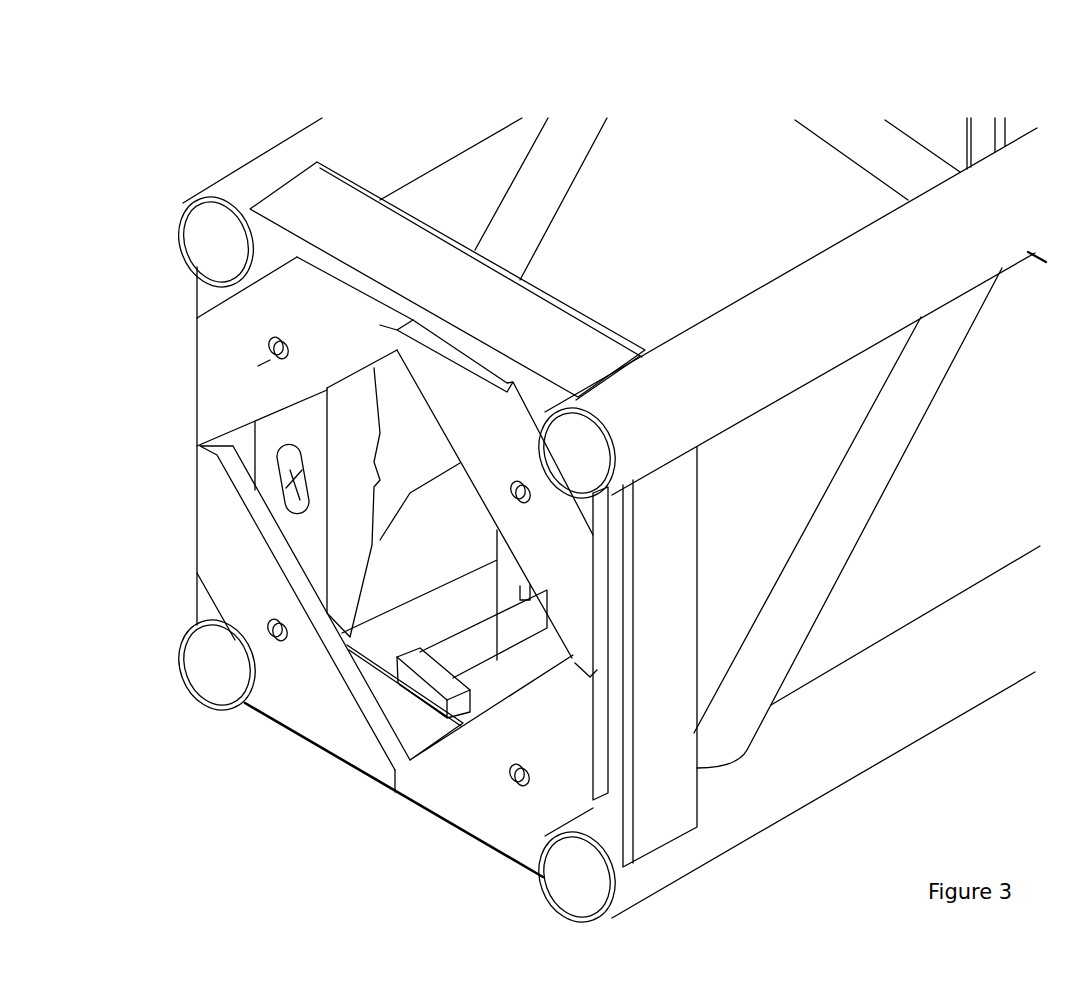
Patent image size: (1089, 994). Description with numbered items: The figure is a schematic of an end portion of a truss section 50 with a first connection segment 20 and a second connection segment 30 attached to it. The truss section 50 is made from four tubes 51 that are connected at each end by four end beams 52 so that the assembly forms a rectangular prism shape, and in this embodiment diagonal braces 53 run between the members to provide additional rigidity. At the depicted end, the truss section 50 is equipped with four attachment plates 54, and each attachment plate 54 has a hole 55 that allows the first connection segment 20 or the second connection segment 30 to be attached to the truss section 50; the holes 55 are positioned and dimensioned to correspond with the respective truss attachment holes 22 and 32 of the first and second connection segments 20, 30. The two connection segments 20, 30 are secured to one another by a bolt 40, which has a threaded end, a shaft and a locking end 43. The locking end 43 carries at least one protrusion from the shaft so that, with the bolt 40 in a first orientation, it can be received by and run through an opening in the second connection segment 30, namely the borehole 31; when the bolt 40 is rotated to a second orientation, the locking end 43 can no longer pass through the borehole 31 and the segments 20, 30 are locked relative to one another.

The first connection segment 20 is at (507, 577).
The truss attachment hole 22 is at (514, 476).
The second connection segment 30 is at (328, 448).
The borehole 31 is at (293, 488).
The truss attachment hole 32 is at (258, 368).
The bolt 40 is at (458, 645).
The locking end 43 is at (417, 685).
The truss section 50 is at (945, 763).
The tube 51 is at (603, 525).
The end beam 52 is at (471, 519).
The diagonal brace 53 is at (738, 443).
The attachment plate 54 is at (213, 490).
The hole 55 is at (272, 340).